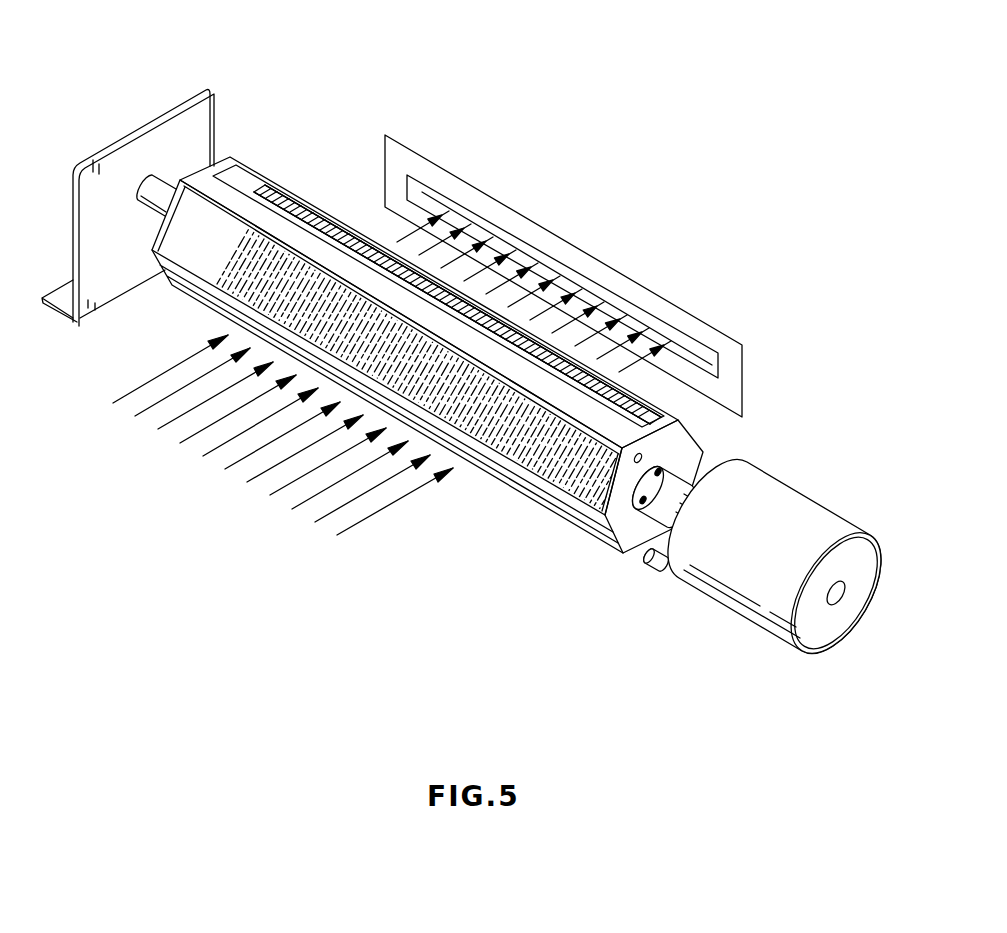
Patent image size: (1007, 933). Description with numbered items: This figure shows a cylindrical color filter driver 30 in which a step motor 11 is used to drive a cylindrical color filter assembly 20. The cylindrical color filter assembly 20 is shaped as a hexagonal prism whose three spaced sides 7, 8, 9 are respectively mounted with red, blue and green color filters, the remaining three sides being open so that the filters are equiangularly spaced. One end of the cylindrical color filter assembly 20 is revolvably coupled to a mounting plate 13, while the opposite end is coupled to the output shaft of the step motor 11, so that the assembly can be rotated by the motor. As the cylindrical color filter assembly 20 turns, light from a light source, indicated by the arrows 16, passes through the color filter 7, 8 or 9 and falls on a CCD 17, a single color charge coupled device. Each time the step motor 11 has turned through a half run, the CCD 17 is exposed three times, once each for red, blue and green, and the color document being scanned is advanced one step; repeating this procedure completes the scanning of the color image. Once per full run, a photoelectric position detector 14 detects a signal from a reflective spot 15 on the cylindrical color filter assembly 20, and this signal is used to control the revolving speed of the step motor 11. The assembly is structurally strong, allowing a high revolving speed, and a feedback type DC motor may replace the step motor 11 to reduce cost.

The side mounted with red color filter 7 is at (277, 190).
The side mounted with blue color filter 8 is at (457, 266).
The side mounted with green color filter 9 is at (457, 266).
The step motor 11 is at (799, 520).
The mounting plate 13 is at (148, 150).
The photoelectric position detector 14 is at (646, 566).
The reflective spot 15 is at (641, 454).
The air flow arrows 16 is at (283, 435).
The CCD (charge coupled device) 17 is at (557, 247).
The cylindrical color filter assembly 20 is at (230, 228).
The cylindrical color filter driver 30 is at (328, 191).